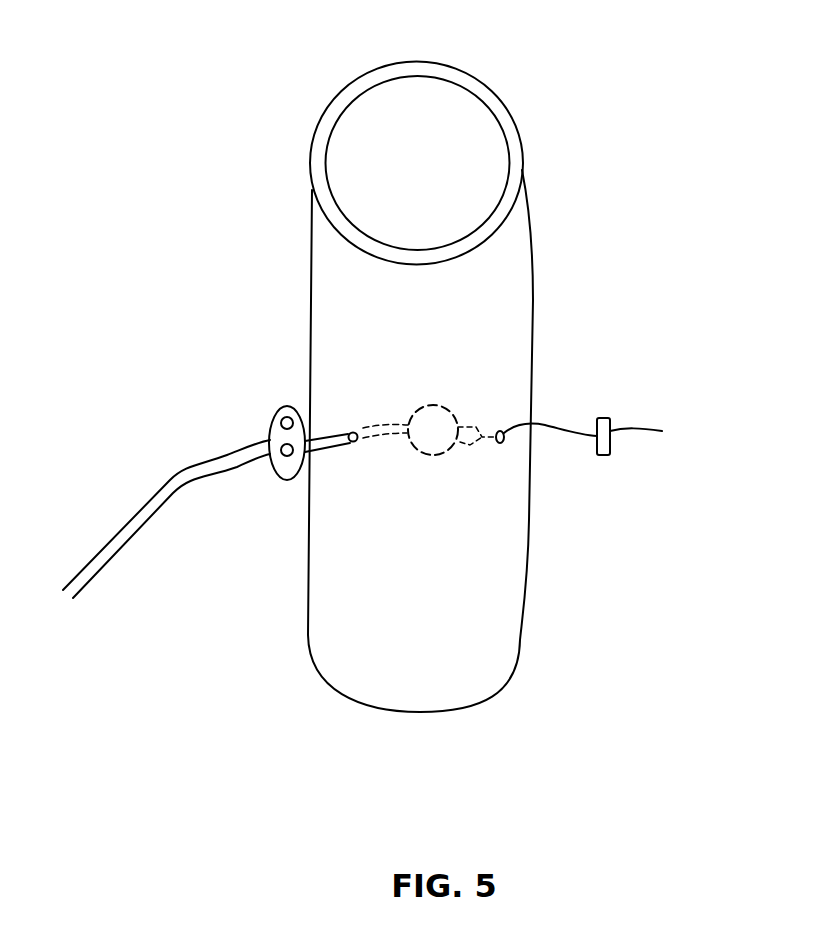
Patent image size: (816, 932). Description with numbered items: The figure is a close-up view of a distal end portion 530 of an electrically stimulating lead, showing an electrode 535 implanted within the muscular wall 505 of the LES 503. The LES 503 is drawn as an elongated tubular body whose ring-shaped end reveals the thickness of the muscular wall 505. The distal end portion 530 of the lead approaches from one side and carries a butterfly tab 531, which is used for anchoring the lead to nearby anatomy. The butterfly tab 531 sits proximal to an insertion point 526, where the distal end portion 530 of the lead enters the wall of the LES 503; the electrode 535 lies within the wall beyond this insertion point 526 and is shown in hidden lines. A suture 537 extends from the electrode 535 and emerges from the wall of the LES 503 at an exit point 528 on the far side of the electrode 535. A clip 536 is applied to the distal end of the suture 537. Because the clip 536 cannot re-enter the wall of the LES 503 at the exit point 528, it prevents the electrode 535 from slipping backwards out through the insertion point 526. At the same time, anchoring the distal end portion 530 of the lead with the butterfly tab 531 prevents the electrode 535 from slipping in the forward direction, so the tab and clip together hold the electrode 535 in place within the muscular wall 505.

The LES 503 is at (418, 87).
The muscular wall 505 is at (513, 160).
The insertion point 526 is at (349, 434).
The exit point 528 is at (500, 431).
The distal end portion 530 is at (133, 512).
The butterfly tab 531 is at (268, 425).
The electrode 535 is at (457, 417).
The clip 536 is at (602, 457).
The suture 537 is at (652, 432).